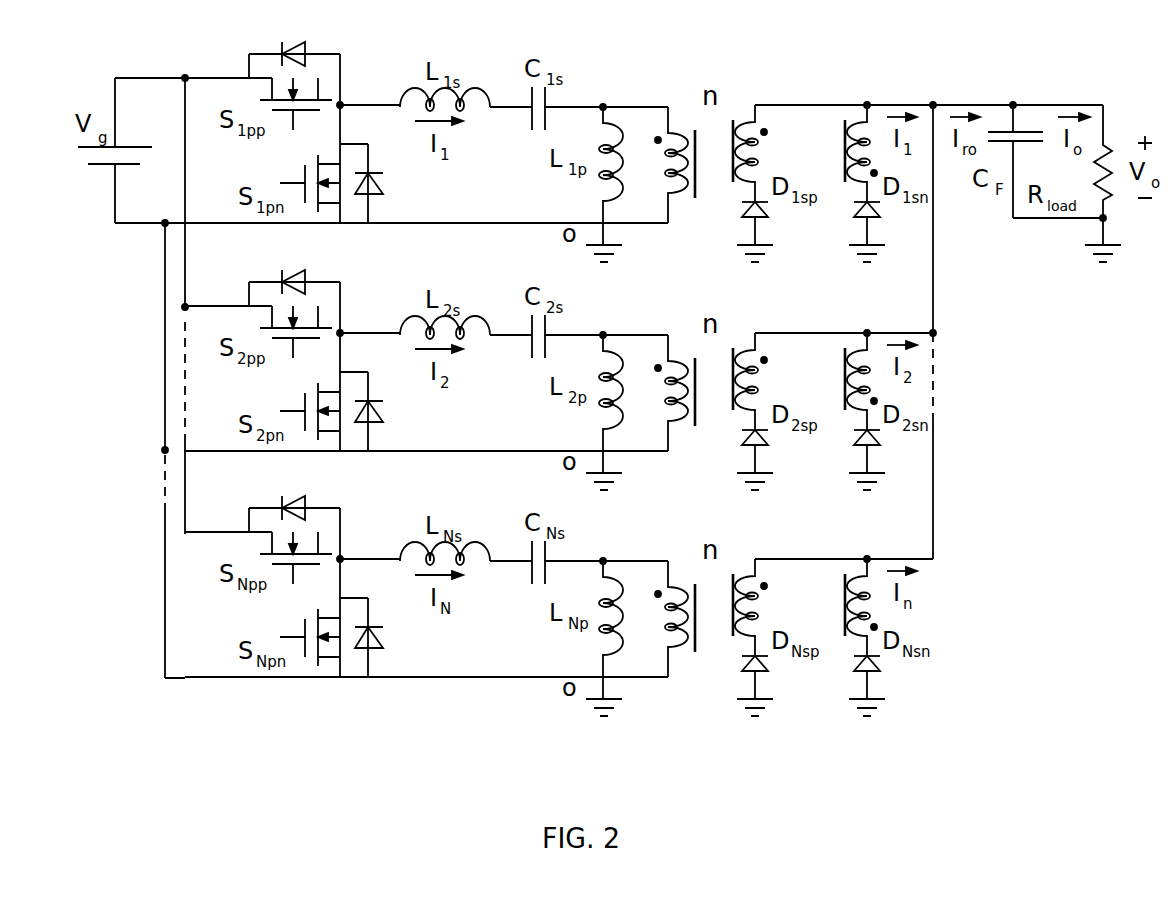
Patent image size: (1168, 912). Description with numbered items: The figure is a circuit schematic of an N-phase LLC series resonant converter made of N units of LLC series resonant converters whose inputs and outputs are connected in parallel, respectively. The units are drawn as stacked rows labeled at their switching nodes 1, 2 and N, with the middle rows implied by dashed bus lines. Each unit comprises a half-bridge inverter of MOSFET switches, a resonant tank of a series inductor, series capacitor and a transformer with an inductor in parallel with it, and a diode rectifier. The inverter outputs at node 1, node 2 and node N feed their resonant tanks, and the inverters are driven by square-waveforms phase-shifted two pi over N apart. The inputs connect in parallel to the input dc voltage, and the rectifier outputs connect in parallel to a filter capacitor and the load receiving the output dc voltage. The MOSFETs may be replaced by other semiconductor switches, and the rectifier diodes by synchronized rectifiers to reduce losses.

The phase node 1 (output of first switch leg) 1 is at (368, 119).
The phase node 2 (output of second switch leg) 2 is at (368, 347).
The phase node N (output of N-th switch leg) N is at (368, 573).